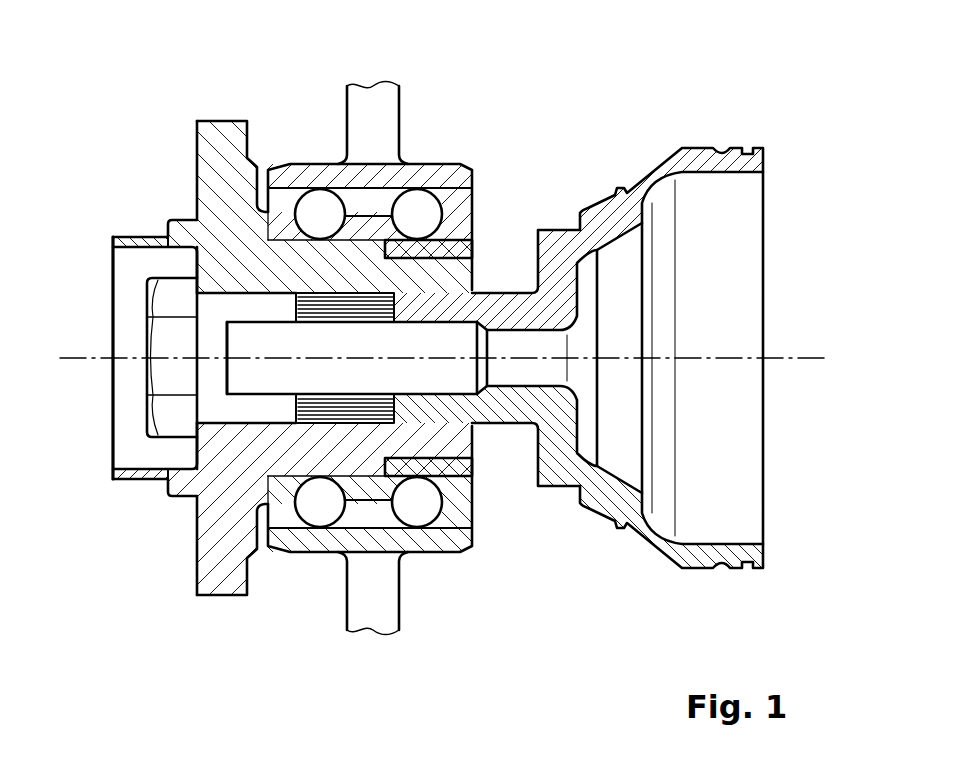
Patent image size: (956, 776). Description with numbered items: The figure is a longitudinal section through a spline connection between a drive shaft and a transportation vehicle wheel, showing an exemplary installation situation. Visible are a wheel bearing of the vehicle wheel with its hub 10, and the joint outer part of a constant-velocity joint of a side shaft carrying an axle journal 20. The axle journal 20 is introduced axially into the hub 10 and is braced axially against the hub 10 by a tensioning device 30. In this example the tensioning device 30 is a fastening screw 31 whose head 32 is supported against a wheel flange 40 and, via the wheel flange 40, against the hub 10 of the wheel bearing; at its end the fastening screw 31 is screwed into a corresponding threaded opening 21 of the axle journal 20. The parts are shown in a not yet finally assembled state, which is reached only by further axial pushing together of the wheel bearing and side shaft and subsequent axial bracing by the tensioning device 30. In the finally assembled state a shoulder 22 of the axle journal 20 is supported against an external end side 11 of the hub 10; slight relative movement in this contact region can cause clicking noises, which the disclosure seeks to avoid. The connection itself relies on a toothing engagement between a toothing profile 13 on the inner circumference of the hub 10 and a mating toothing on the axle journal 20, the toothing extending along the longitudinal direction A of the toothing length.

The hub 10 is at (376, 258).
The external end side 11 is at (474, 271).
The toothing profile 13 is at (323, 300).
The axle journal 20 is at (512, 405).
The threaded opening 21 is at (447, 396).
The shoulder 22 is at (531, 270).
The tensioning device 30 is at (133, 279).
The fastening screw 31 is at (210, 370).
The head 32 is at (199, 325).
The wheel flange 40 is at (213, 128).
The longitudinal direction A is at (793, 356).